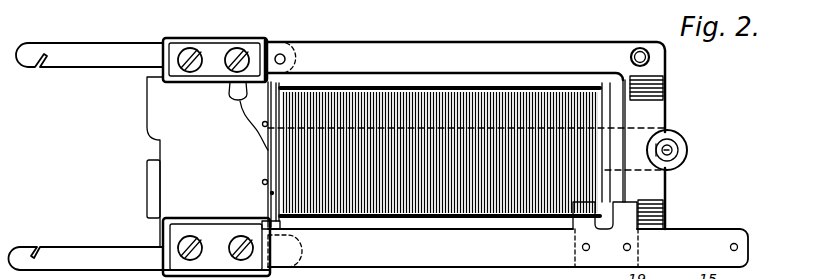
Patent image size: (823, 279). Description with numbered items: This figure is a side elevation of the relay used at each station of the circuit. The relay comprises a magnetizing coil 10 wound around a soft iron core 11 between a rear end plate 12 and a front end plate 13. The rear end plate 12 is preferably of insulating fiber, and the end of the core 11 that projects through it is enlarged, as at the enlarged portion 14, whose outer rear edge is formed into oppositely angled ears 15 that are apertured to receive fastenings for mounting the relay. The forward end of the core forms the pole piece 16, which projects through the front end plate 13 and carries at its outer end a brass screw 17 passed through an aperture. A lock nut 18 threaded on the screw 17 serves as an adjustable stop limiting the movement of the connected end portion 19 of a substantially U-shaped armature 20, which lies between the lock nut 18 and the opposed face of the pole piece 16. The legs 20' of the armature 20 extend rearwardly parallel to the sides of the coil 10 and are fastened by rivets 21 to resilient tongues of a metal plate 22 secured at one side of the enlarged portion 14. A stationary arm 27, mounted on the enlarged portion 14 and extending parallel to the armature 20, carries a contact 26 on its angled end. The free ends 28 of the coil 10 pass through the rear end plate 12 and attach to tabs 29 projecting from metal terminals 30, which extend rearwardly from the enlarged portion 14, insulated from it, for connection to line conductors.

The magnetizing coil 10 is at (367, 92).
The soft iron core 11 is at (403, 127).
The rear end plate 12 is at (272, 193).
The front end plate 13 is at (607, 115).
The enlarged portion of the core 14 is at (185, 165).
The oppositely angled ears 15 is at (153, 194).
The pole piece 16 is at (687, 140).
The brass screw 17 is at (689, 150).
The lock nut 18 is at (680, 168).
The connected end portion of the armature 19 is at (665, 94).
The armature 20 is at (634, 41).
The legs of the armature 20' is at (465, 124).
The rivets 21 is at (281, 55).
The metal plate 22 is at (298, 53).
The contact 26 is at (67, 256).
The stationary arm 27 is at (442, 258).
The free ends of the coil 28 is at (240, 121).
The tabs 29 is at (230, 91).
The metal terminals 30 is at (82, 50).